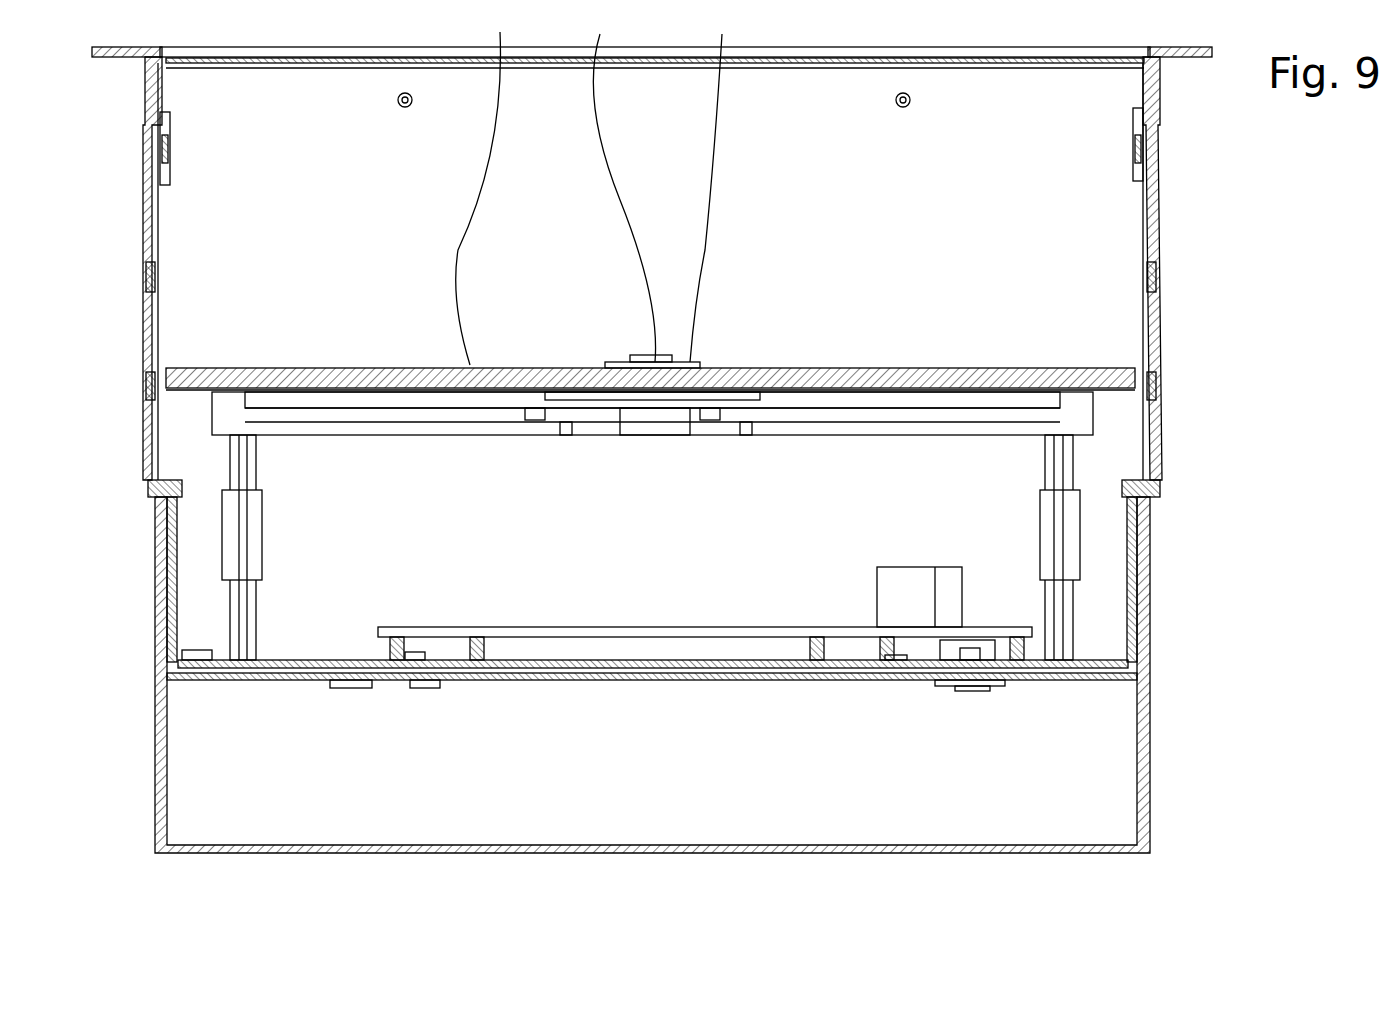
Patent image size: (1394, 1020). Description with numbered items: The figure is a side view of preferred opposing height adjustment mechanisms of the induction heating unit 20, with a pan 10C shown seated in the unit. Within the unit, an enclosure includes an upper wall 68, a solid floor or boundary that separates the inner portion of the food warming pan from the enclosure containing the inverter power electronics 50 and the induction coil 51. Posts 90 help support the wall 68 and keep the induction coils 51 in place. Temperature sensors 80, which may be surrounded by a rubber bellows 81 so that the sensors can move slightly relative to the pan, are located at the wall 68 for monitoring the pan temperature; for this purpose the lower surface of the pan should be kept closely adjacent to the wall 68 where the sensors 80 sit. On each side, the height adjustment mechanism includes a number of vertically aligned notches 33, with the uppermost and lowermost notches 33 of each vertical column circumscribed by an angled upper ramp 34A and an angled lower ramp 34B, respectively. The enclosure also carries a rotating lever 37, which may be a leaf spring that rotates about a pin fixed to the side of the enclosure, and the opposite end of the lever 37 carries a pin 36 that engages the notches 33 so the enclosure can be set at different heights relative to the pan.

The induction heating unit 20 is at (1165, 103).
The upper ramp 34A is at (180, 140).
The notch 33 is at (140, 372).
The pin 36 is at (150, 498).
The lower ramp 34B is at (170, 725).
The rotating lever 37 is at (170, 548).
The sensor plate 10C is at (993, 353).
The induction coil 51 is at (312, 428).
The post 90 is at (232, 560).
The power inverter electronics 50 is at (475, 625).
The upper wall 68 is at (485, 187).
The temperature sensor 80 is at (624, 185).
The rubber bellows 81 is at (720, 185).